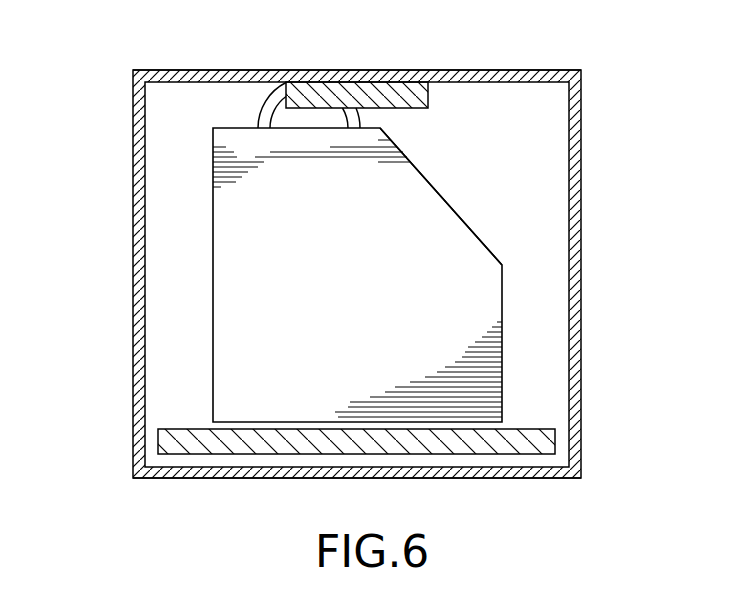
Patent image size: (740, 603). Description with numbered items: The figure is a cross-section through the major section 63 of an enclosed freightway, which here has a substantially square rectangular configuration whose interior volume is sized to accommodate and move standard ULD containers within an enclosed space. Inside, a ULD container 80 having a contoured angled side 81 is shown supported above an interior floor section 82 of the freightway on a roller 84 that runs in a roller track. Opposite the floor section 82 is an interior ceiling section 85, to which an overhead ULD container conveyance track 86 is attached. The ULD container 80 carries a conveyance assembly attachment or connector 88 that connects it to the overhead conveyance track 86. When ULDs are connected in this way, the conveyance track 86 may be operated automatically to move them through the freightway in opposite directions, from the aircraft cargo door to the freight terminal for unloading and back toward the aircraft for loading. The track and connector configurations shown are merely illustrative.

The major section 63 is at (120, 193).
The ULD container 80 is at (372, 285).
The contoured angled side 81 is at (456, 212).
The interior floor section 82 is at (505, 478).
The roller 84 is at (538, 441).
The interior ceiling section 85 is at (438, 73).
The overhead ULD container conveyance track 86 is at (345, 95).
The conveyance assembly attachment or connector 88 is at (268, 97).